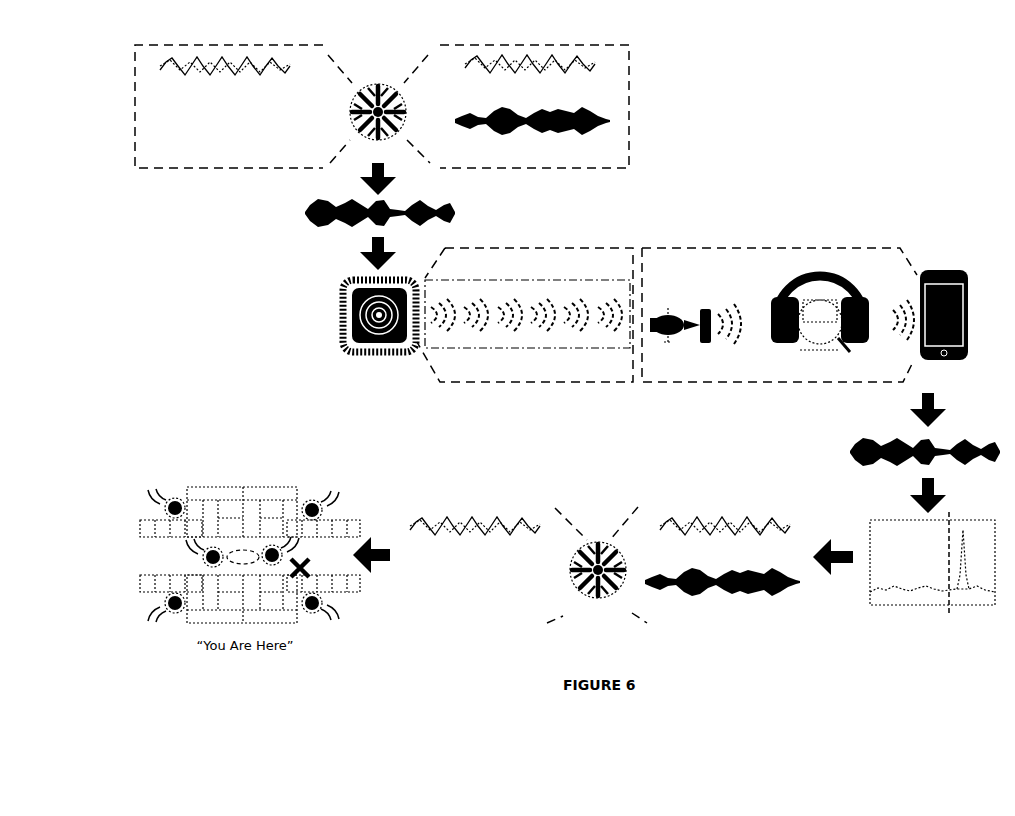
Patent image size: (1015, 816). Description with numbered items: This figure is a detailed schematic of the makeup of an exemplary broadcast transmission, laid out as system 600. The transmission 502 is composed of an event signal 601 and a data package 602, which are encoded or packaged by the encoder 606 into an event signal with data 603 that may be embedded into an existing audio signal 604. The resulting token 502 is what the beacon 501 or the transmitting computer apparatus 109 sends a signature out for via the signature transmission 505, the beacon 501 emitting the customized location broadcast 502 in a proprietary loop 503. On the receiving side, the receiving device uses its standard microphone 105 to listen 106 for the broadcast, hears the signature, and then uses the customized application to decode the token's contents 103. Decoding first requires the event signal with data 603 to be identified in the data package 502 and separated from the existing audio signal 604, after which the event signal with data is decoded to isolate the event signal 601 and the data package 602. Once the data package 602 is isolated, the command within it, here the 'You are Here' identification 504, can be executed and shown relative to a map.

The signal data stripping / token decoding 103 is at (822, 345).
The standard microphone 105 is at (676, 308).
The listening 106 is at (906, 372).
The computer apparatus (transmitting device) 109 is at (965, 270).
The beacon 501 is at (352, 290).
The customized location broadcast / transmission (token) 502 is at (305, 215).
The proprietary loop 503 is at (520, 282).
The 'You are Here' identification 504 is at (895, 302).
The signature transmission 505 is at (540, 248).
The transmission makeup system 600 is at (922, 642).
The event signal 601 is at (173, 77).
The data package 602 is at (269, 133).
The event signal with data 603 is at (592, 63).
The existing audio signal 604 is at (603, 127).
The encoder 606 is at (422, 66).